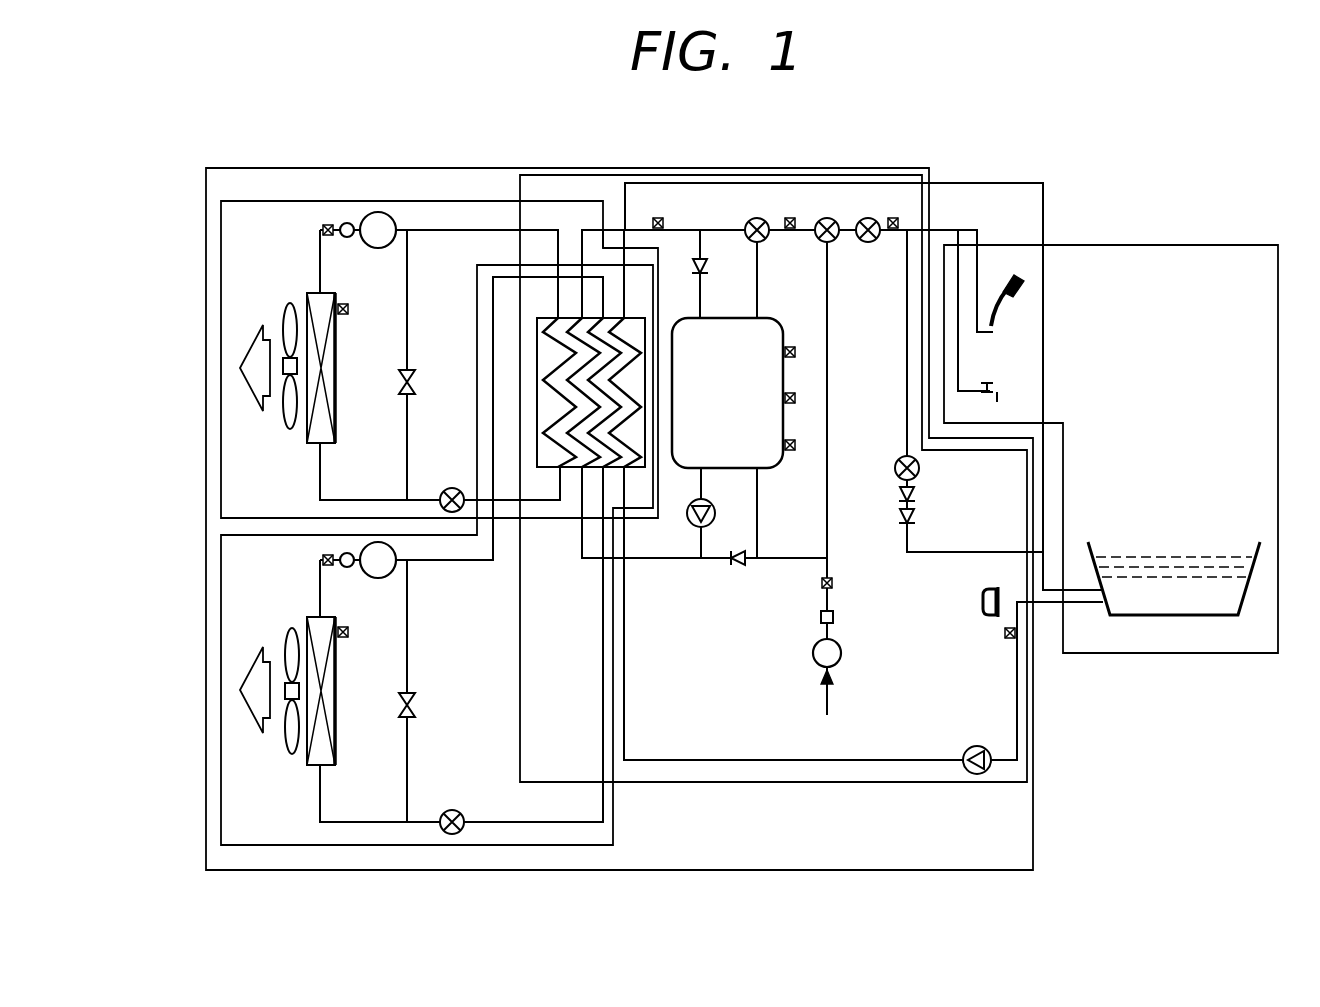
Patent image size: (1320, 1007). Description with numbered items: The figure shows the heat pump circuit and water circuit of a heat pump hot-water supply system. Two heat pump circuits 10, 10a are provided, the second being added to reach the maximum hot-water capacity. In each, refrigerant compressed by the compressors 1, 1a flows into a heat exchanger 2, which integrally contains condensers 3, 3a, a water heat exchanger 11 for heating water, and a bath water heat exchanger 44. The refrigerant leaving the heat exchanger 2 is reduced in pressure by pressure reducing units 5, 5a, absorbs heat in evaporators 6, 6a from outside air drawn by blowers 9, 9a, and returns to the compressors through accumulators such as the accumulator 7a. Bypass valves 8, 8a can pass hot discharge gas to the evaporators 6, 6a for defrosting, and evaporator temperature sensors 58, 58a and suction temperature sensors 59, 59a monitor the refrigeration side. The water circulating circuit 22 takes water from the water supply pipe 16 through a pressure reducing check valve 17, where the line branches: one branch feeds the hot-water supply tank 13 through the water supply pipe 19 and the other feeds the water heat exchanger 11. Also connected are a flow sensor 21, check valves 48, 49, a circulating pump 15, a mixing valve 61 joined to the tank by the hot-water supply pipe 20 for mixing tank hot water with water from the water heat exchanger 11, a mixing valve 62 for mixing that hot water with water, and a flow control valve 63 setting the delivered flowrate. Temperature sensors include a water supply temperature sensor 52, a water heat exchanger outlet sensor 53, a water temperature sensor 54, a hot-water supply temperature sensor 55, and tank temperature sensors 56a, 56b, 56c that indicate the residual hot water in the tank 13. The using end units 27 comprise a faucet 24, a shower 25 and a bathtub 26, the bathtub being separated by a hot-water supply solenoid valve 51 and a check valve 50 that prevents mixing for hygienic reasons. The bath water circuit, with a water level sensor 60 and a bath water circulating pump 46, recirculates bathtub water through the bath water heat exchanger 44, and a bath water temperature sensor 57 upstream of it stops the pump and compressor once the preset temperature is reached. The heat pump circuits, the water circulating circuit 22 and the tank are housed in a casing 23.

The compressor 1 is at (378, 578).
The compressor 1a is at (383, 213).
The heat exchanger 2 is at (543, 326).
The condenser 3 is at (577, 362).
The condenser 3a is at (577, 343).
The pressure reducing unit 5 is at (455, 811).
The pressure reducing unit 5a is at (455, 512).
The evaporator 6 is at (337, 750).
The evaporator 6a is at (337, 432).
The accumulator 7a is at (347, 223).
The bypass valve 8 is at (416, 705).
The bypass valve 8a is at (399, 382).
The blower 9 is at (290, 760).
The blower 9a is at (290, 432).
The heat pump circuit 10 is at (221, 670).
The heat pump circuit 10a is at (221, 425).
The water heat exchanger 11 is at (570, 400).
The hot-water supply tank 13 is at (785, 460).
The circulating pump 15 is at (717, 513).
The water supply pipe 16 is at (830, 695).
The pressure reducing check valve 17 is at (813, 653).
The water supply pipe 19 is at (760, 530).
The hot-water supply pipe 20 is at (758, 290).
The flow sensor 21 is at (820, 617).
The water circulating circuit 22 is at (880, 785).
The casing 23 is at (930, 170).
The faucet 24 is at (997, 394).
The shower 25 is at (1014, 300).
The bathtub 26 is at (1198, 552).
The using end unit 27 is at (1108, 245).
The bath water heat exchanger 44 is at (597, 453).
The bath water circulating pump 46 is at (970, 746).
The check valve 48 is at (735, 566).
The check valve 49 is at (703, 262).
The check valve 50 is at (915, 517).
The hot-water supply solenoid valve 51 is at (920, 468).
The water supply temperature sensor 52 is at (834, 583).
The water heat exchanger outlet water temperature sensor 53 is at (658, 217).
The water temperature sensor 54 is at (790, 217).
The hot-water supply temperature sensor 55 is at (900, 222).
The tank temperature sensor 56a is at (797, 445).
The tank temperature sensor 56b is at (797, 398).
The tank temperature sensor 56c is at (797, 352).
The bath water temperature sensor 57 is at (1003, 633).
The evaporator temperature sensor 58 is at (348, 634).
The evaporator temperature sensor 58a is at (348, 306).
The suction temperature sensor 59 is at (322, 560).
The suction temperature sensor 59a is at (322, 230).
The water level sensor 60 is at (981, 602).
The mixing valve 61 is at (755, 217).
The mixing valve 62 is at (832, 243).
The flow control valve 63 is at (869, 217).